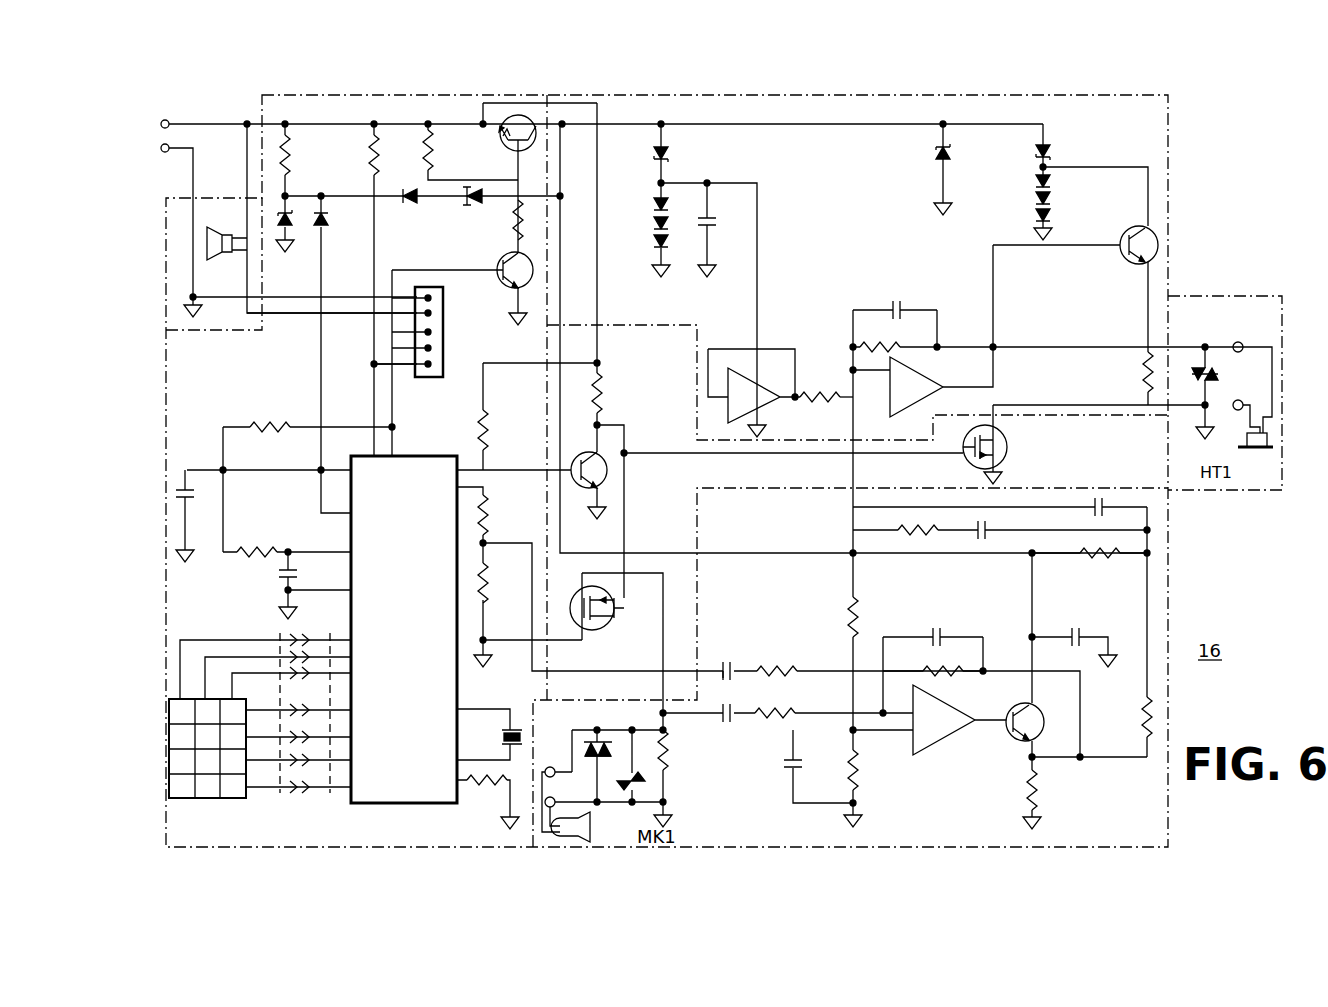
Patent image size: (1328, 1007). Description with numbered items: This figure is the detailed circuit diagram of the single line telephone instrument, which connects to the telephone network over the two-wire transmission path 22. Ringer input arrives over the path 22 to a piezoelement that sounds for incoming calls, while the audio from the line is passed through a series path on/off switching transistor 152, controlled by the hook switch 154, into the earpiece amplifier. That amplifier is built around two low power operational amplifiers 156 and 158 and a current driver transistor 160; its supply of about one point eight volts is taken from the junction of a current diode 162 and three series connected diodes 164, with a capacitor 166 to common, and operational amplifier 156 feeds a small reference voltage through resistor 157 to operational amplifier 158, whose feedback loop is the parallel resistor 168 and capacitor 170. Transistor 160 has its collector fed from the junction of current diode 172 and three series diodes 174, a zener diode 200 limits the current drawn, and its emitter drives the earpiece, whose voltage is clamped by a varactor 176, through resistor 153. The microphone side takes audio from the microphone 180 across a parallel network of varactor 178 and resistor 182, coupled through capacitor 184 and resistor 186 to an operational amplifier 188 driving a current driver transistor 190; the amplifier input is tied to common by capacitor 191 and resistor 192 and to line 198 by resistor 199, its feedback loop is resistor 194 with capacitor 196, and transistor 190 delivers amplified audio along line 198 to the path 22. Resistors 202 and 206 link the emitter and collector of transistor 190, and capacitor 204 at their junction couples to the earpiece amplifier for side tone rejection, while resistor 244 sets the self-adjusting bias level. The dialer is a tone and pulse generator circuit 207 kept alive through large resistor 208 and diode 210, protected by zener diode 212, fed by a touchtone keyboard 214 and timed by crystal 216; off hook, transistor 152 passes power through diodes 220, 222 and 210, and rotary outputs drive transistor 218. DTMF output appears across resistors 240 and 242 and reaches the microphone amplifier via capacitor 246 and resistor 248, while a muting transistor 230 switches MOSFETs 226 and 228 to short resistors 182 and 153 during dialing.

The two-wire transmission path 22 is at (185, 126).
The series path on/off switching transistor 152 is at (528, 150).
The resistor 153 is at (1144, 370).
The hook switch 154 is at (445, 331).
The operational amplifier 156 is at (760, 408).
The resistor 157 is at (806, 396).
The operational amplifier 158 is at (925, 378).
The current driver transistor 160 is at (1133, 228).
The current diode 162 is at (672, 150).
The three series connected diodes 164 is at (655, 236).
The capacitor 166 is at (712, 217).
The resistor 168 is at (892, 345).
The capacitor 170 is at (890, 308).
The current diode 172 is at (1050, 148).
The three series connected diodes 174 is at (1050, 214).
The varactor 176 is at (1220, 375).
The varactor 178 is at (634, 773).
The microphone 180 is at (590, 826).
The resistor 182 is at (664, 761).
The capacitor 184 is at (716, 719).
The resistor 186 is at (763, 719).
The operational amplifier 188 is at (927, 736).
The current driver transistor 190 is at (1010, 738).
The capacitor 191 is at (790, 769).
The resistor 192 is at (850, 764).
The resistor 194 is at (936, 666).
The capacitor 196 is at (950, 632).
The line 198 is at (725, 556).
The resistor 199 is at (858, 612).
The zener diode 200 is at (938, 148).
The resistor 202 is at (1140, 722).
The capacitor 204 is at (1090, 507).
The resistor 206 is at (1090, 558).
The tone and pulse generator circuit 207 is at (388, 803).
The large resistor 208 is at (290, 150).
The diode 210 is at (328, 222).
The zener diode 212 is at (286, 215).
The touchtone keyboard 214 is at (200, 800).
The crystal 216 is at (512, 726).
The transistor 218 is at (502, 264).
The diode 220 is at (482, 198).
The diode 222 is at (410, 198).
The first MOSFET 226 is at (590, 630).
The second MOSFET 228 is at (1008, 442).
The transistor 230 is at (572, 490).
The resistor 240 is at (487, 517).
The resistor 242 is at (490, 585).
The resistor 244 is at (1040, 783).
The capacitor 246 is at (724, 667).
The resistor 248 is at (776, 667).